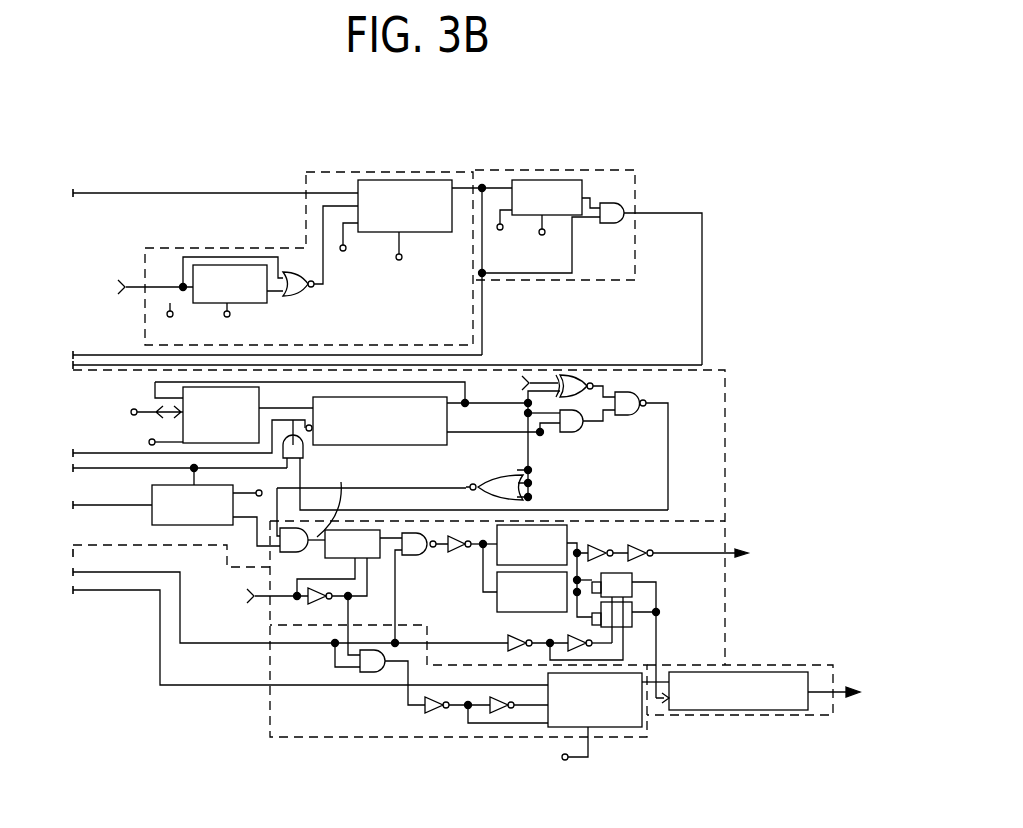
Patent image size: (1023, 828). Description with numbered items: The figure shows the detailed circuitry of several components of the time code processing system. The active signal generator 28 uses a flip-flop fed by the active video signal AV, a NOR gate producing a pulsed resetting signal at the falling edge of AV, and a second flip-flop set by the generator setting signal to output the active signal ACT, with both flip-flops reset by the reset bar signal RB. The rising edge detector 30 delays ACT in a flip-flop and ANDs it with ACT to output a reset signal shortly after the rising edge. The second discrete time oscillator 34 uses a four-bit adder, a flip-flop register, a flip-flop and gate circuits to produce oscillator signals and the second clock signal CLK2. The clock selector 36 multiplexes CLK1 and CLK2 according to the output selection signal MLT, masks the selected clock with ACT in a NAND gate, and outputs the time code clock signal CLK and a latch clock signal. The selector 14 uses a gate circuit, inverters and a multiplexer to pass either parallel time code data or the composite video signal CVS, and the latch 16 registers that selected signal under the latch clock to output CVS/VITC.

The selector 14 is at (268, 710).
The latch 16 is at (833, 712).
The active signal generator 28 is at (398, 172).
The rising edge detector 30 is at (606, 172).
The second discrete time oscillator 34 is at (727, 438).
The clock selector 36 is at (727, 530).